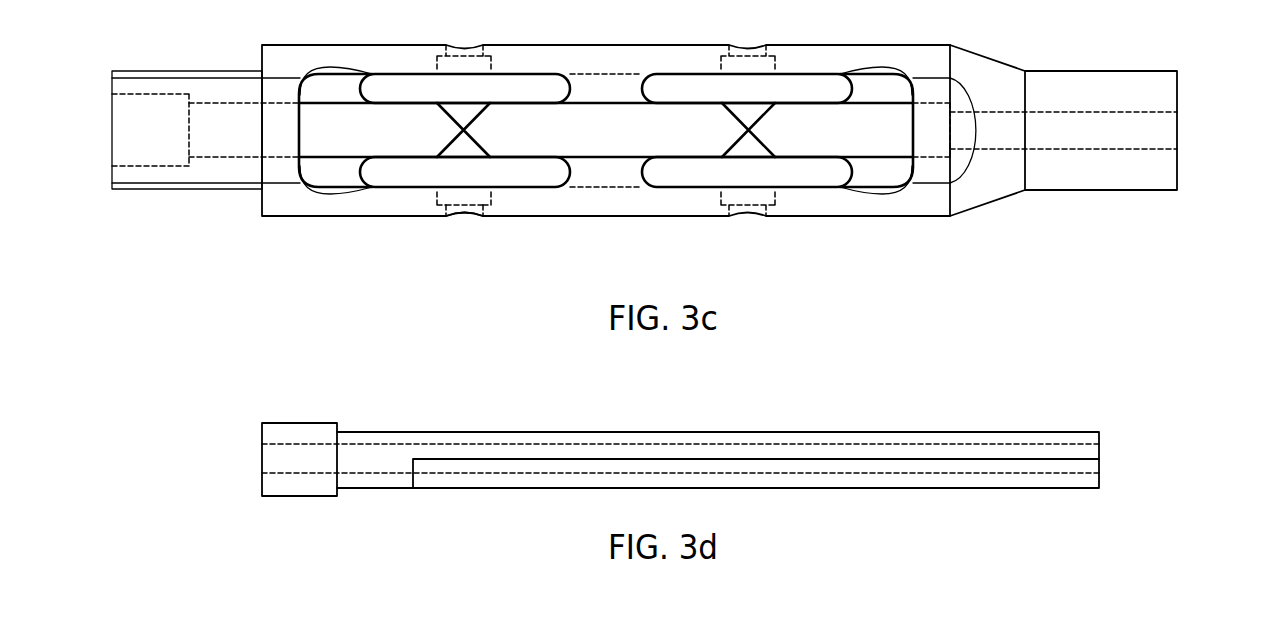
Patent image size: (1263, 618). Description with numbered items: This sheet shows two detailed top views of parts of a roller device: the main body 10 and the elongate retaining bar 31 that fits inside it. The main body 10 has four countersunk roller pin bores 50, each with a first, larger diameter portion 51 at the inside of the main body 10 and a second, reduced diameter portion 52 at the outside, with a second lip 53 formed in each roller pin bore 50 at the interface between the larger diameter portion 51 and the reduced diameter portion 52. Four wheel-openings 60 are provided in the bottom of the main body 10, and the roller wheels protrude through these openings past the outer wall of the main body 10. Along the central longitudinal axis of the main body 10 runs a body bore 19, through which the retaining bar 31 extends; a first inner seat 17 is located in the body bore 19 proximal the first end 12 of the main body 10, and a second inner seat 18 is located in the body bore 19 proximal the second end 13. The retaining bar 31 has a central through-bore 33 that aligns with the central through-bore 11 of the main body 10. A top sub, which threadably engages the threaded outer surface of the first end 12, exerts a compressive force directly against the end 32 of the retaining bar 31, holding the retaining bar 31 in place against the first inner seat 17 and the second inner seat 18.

In FIG. 3C, the main body 10 is at (995, 183).
In FIG. 3C, the central through-bore 11 is at (1123, 151).
In FIG. 3C, the first end 12 is at (112, 174).
In FIG. 3C, the second end 13 is at (1178, 90).
In FIG. 3C, the first inner seat 17 is at (188, 163).
In FIG. 3C, the second inner seat 18 is at (950, 107).
In FIG. 3C, the body bore 19 is at (237, 159).
In FIG. 3D, the retaining bar 31 is at (327, 436).
In FIG. 3D, the end 32 is at (262, 485).
In FIG. 3D, the central through-bore 33 is at (380, 474).
In FIG. 3C, the roller pin bore 50 is at (466, 234).
In FIG. 3C, the first, larger diameter portion 51 is at (437, 196).
In FIG. 3C, the second, reduced diameter portion 52 is at (457, 218).
In FIG. 3C, the second lip 53 is at (482, 212).
In FIG. 3C, the wheel-opening 60 is at (853, 173).